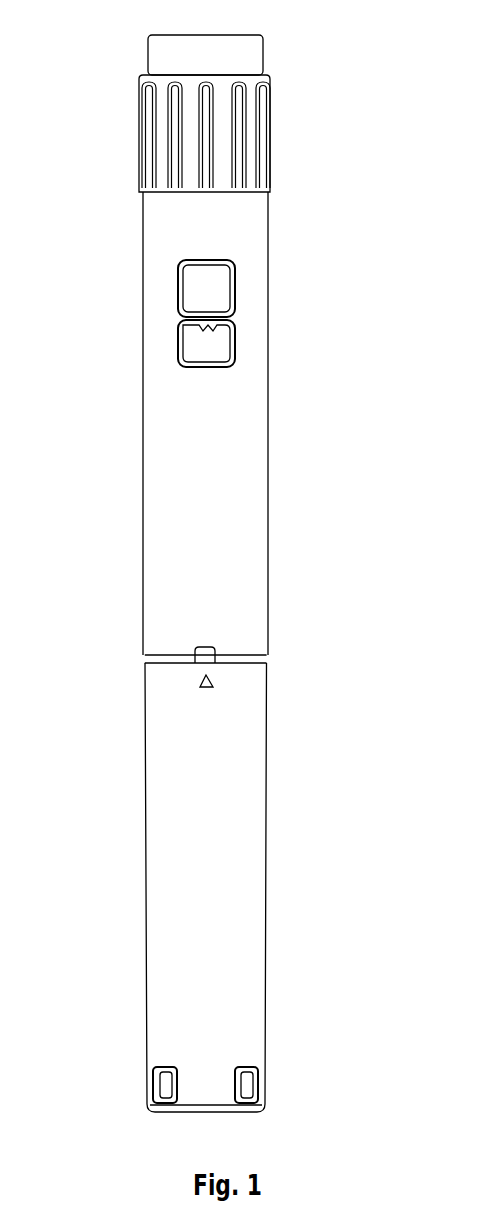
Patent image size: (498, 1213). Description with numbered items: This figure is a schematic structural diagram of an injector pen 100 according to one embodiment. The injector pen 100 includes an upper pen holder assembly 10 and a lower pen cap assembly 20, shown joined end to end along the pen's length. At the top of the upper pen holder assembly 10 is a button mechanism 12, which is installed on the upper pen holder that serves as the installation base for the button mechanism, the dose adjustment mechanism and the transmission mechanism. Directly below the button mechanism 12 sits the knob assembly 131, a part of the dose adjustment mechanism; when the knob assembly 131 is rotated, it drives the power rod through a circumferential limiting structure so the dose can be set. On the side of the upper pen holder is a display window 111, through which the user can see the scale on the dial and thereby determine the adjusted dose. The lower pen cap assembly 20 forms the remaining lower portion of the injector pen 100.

The injector pen 100 is at (93, 84).
The upper pen holder assembly 10 is at (210, 439).
The button mechanism 12 is at (244, 58).
The knob assembly 131 is at (254, 143).
The display window 111 is at (236, 340).
The lower pen cap assembly 20 is at (160, 830).